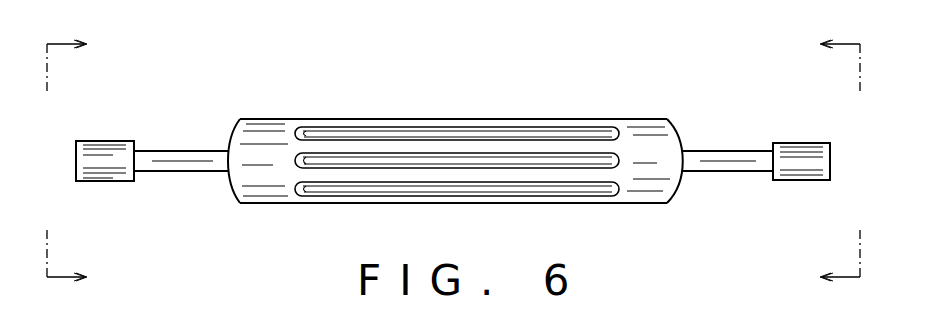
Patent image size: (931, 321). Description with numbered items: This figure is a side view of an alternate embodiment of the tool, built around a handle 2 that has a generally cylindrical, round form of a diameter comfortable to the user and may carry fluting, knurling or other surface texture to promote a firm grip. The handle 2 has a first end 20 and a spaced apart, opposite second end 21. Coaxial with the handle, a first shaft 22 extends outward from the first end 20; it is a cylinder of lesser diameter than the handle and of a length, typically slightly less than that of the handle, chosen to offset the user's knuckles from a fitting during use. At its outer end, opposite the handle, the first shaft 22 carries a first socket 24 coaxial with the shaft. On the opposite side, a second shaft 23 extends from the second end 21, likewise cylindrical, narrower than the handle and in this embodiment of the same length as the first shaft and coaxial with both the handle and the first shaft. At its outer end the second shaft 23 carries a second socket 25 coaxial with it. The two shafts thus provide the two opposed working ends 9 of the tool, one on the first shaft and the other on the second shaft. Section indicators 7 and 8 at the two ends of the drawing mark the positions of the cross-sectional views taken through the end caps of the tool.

The handle 2 is at (393, 119).
The section line 7- 7 is at (830, 162).
The section line 8- 8 is at (78, 162).
The working ends 9 is at (76, 165).
The first end 20 is at (683, 138).
The second end 21 is at (236, 131).
The first shaft 22 is at (743, 173).
The second shaft 23 is at (190, 150).
The first socket 24 is at (810, 181).
The second socket 25 is at (92, 182).